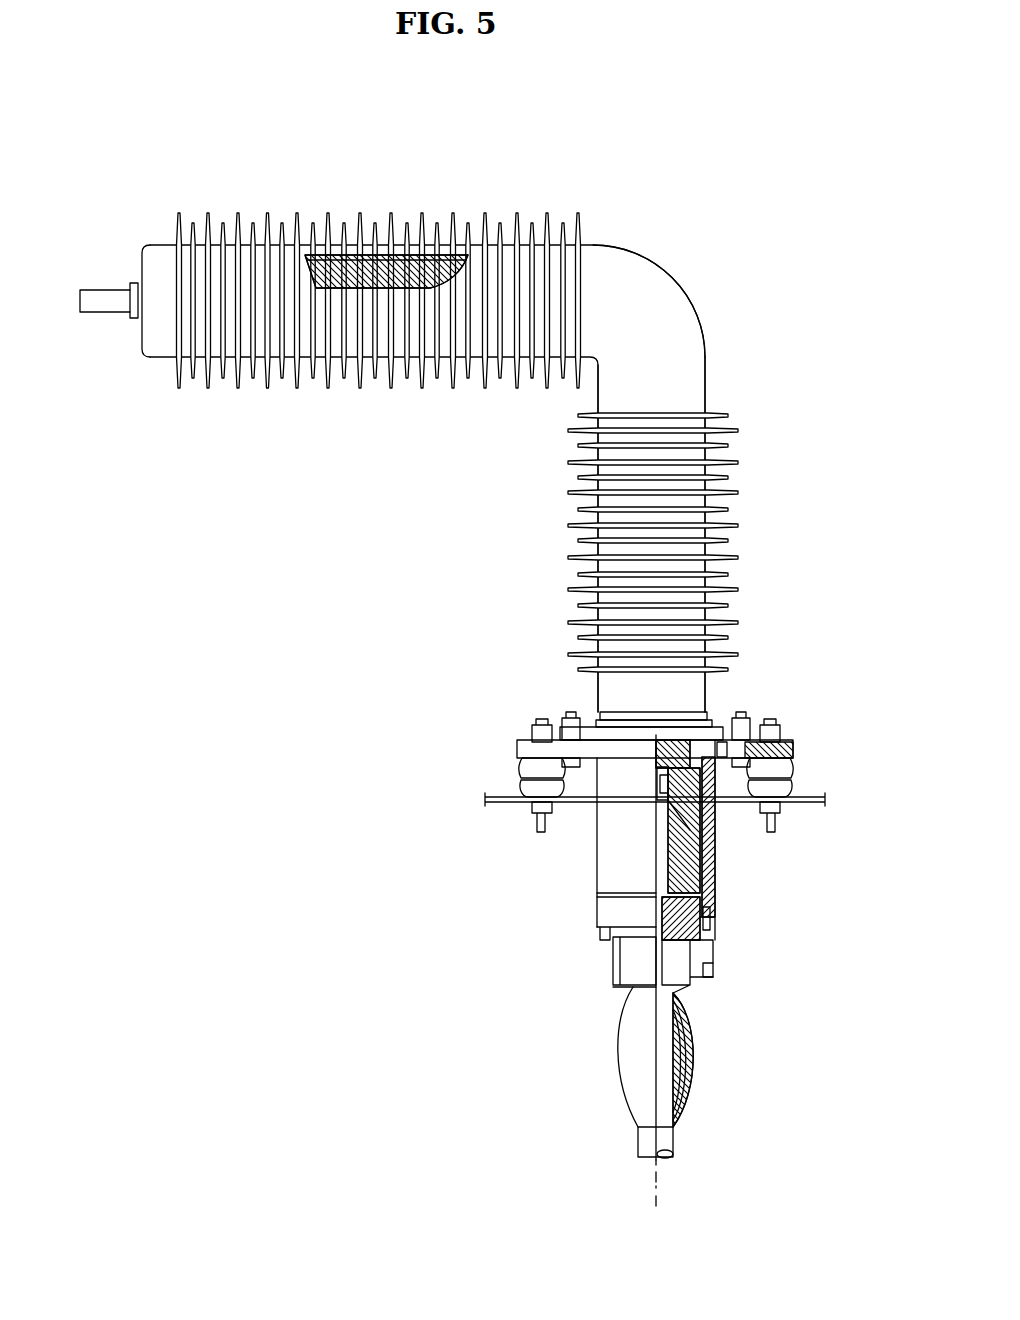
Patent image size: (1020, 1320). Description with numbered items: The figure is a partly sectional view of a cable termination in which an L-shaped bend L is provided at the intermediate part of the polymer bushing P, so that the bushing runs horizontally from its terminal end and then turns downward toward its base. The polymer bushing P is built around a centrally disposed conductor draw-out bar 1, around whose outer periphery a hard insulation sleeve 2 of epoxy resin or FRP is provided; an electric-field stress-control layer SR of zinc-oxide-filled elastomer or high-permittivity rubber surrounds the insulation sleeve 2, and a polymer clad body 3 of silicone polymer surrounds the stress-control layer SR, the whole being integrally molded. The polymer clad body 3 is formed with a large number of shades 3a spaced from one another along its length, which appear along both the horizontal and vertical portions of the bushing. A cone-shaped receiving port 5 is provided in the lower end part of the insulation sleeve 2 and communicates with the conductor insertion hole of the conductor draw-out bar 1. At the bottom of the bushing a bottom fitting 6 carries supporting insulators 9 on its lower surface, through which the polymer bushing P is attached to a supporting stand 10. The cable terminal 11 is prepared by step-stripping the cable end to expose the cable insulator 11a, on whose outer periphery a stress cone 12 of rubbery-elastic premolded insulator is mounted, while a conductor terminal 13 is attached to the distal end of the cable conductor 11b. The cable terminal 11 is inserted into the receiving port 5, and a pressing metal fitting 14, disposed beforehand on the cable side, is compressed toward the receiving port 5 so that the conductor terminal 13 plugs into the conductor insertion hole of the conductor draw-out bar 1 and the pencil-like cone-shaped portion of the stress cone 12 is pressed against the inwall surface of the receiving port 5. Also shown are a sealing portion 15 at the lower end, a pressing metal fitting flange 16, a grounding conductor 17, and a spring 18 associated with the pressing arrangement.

The conductor draw-out bar 1 is at (106, 300).
The hard insulation sleeve 2 is at (350, 255).
The polymer clad body 3 is at (430, 217).
The shades 3a is at (268, 217).
The electric-field stress-control layer SR is at (398, 253).
The polymer bushing P is at (490, 183).
The L-shaped bend L is at (702, 317).
The cone-shaped receiving port 5 is at (683, 843).
The bottom fitting 6 is at (803, 743).
The supporting insulators 9 is at (780, 788).
The supporting stand 10 is at (810, 803).
The cable terminal 11 is at (582, 947).
The cable insulator 11a is at (660, 860).
The cable conductor 11b is at (660, 787).
The stress cone 12 is at (675, 815).
The conductor terminal 13 is at (690, 745).
The pressing metal fitting 14 is at (690, 873).
The sealing portion 15 is at (690, 1067).
The pressing metal fitting flange 16 is at (690, 980).
The grounding conductor 17 is at (715, 915).
The spring 18 is at (697, 948).